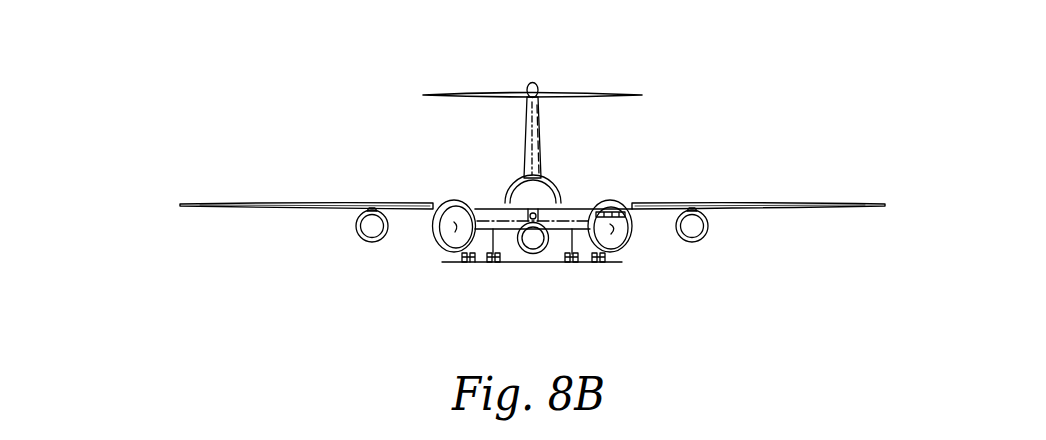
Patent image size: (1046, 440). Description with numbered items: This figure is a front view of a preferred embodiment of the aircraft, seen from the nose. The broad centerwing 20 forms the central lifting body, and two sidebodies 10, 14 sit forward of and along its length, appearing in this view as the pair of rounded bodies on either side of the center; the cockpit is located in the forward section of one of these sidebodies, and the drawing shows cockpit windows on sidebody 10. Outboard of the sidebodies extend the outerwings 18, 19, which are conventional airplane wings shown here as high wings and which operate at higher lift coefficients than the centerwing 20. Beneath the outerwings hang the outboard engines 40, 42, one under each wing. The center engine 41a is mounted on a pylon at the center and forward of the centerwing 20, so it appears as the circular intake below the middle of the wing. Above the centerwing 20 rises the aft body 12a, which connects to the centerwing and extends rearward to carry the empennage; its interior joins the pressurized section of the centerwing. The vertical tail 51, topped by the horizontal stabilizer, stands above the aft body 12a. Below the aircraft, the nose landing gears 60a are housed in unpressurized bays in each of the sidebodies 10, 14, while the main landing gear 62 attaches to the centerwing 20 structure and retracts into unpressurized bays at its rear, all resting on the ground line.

The sidebody 10 is at (631, 233).
The aft body 12a is at (560, 192).
The sidebody 14 is at (437, 233).
The outerwing 18 is at (827, 203).
The left wing 19 is at (261, 203).
The centerwing 20 is at (489, 199).
The right outboard engine 40 is at (707, 230).
The center engine 41a is at (532, 247).
The left outboard engine 42 is at (365, 238).
The vertical stabilizer 51 is at (526, 123).
The nose landing gear 60a is at (604, 263).
The main landing gear 62 is at (492, 263).